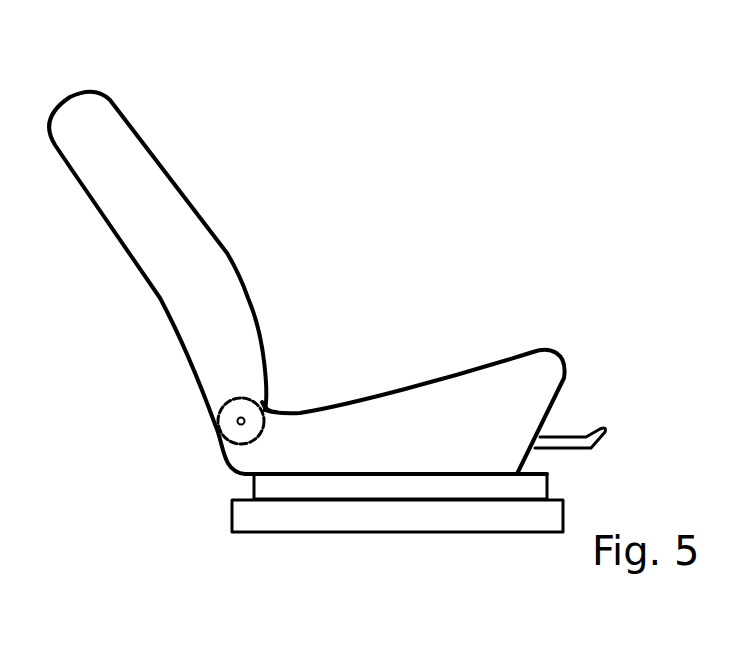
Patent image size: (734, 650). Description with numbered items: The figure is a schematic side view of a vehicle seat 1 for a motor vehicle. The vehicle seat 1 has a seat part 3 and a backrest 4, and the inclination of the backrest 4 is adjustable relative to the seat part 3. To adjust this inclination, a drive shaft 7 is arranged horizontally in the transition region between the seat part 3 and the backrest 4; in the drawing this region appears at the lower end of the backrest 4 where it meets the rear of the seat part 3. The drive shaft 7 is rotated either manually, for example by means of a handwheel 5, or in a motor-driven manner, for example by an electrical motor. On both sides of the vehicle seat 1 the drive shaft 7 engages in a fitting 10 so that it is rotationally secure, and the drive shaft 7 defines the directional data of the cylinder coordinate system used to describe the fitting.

The vehicle seat 1 is at (327, 312).
The seat part 3 is at (422, 393).
The backrest 4 is at (138, 187).
The handwheel 5 is at (268, 407).
The drive shaft 7 is at (242, 422).
The fitting 10 is at (205, 428).